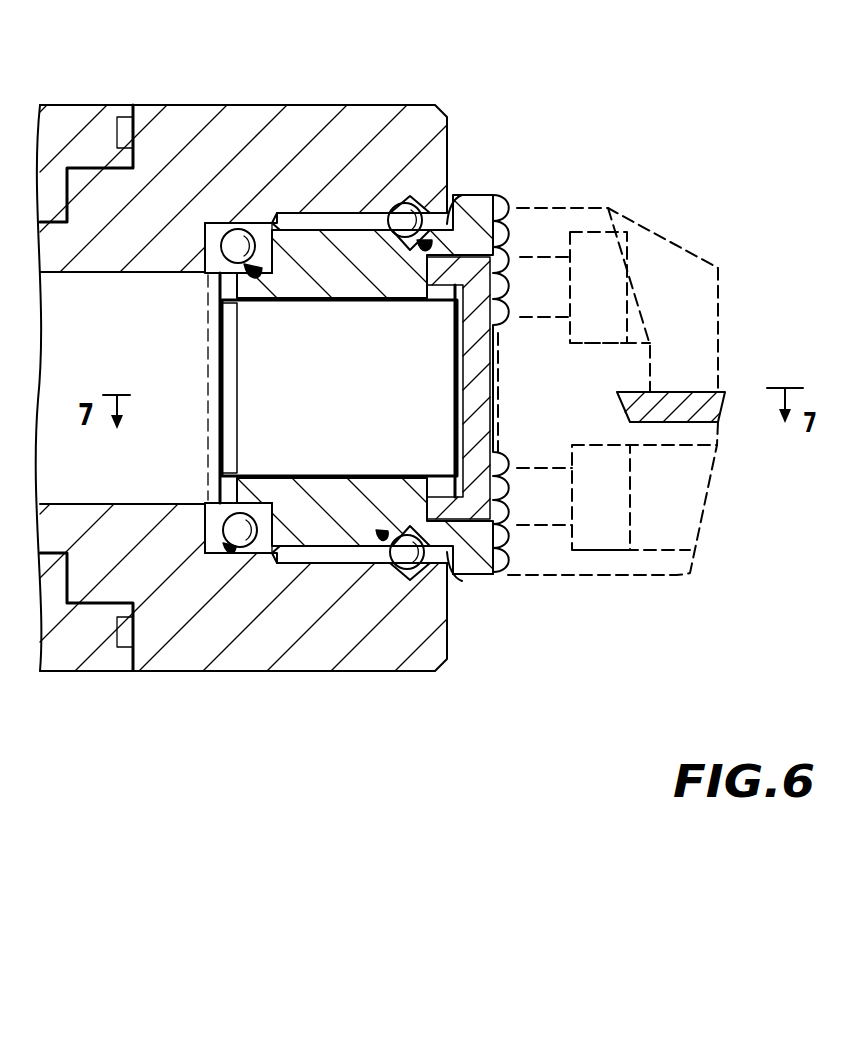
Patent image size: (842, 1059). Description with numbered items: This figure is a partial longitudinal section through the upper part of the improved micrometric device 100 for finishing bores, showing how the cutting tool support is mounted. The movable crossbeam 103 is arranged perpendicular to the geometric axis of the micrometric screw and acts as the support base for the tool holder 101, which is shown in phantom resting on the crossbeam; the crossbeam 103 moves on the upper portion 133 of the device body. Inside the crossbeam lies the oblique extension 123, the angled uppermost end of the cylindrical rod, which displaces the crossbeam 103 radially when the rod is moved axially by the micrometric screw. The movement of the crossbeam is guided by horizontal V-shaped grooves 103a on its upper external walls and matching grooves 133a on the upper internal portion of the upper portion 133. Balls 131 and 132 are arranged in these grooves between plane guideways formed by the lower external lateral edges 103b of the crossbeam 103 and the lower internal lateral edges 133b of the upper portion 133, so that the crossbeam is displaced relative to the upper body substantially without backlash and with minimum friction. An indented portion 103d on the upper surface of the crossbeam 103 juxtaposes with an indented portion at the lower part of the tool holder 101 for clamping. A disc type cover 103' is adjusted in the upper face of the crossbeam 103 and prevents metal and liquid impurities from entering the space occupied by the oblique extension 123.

The micrometric device 100 is at (600, 80).
The tool holder 101 is at (583, 220).
The movable crossbeam 103 is at (365, 308).
The disc type cover 103' is at (516, 576).
The V shape grooves of the crossbeam 103a is at (462, 195).
The lower external lateral edges of the crossbeam 103b is at (268, 224).
The indented portion 103d is at (503, 498).
The oblique extension 123 is at (367, 405).
The balls 131 is at (440, 200).
The balls 132 is at (250, 229).
The upper portion of the micrometric device 133 is at (424, 120).
The V shape grooves of the upper portion 133a is at (447, 148).
The lower internal lateral edges of the upper portion 133b is at (228, 232).